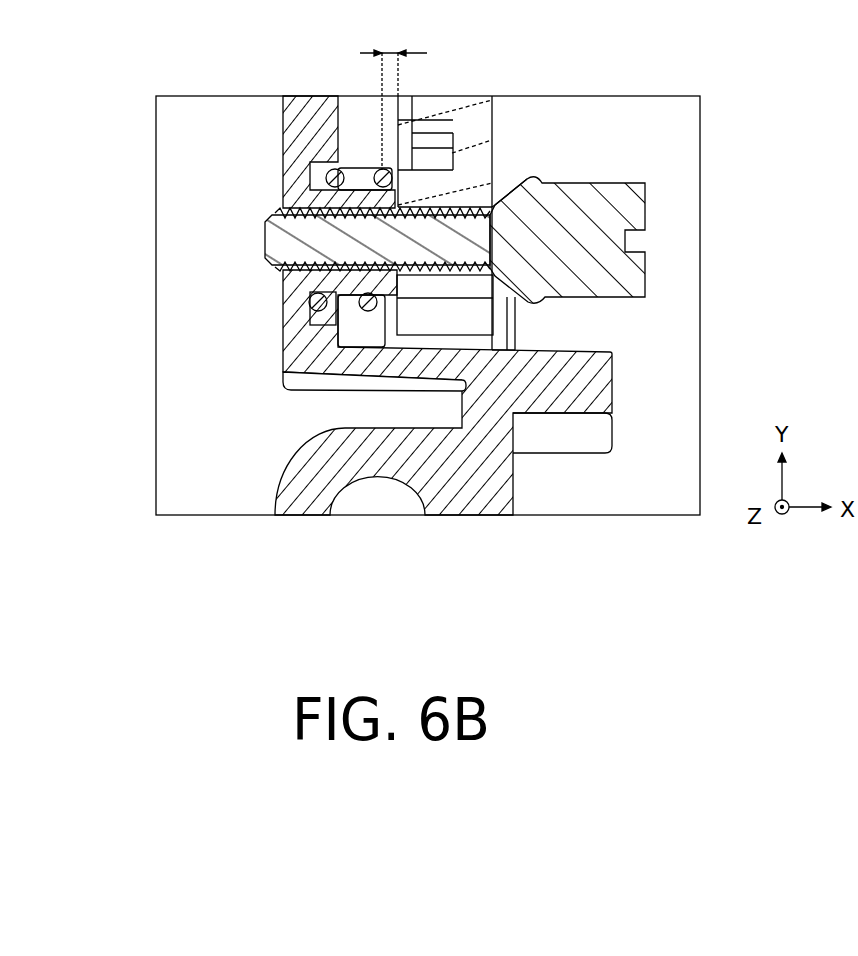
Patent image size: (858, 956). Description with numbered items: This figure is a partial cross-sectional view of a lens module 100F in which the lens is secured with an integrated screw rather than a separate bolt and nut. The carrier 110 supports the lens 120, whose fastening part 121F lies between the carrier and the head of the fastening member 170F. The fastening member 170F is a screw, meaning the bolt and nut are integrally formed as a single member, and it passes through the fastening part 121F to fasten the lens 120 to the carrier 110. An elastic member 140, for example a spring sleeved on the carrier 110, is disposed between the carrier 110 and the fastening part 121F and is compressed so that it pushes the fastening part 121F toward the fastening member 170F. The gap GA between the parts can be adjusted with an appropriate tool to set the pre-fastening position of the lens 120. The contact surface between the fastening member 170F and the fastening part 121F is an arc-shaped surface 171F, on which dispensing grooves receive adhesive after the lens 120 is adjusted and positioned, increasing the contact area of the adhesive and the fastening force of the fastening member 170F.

The lens module 100F is at (767, 608).
The carrier 110 is at (282, 128).
The elastic member 140 is at (308, 160).
The gap GA is at (392, 53).
The lens 120 is at (471, 200).
The fastening part 121F is at (490, 158).
The fastening member 170F is at (612, 187).
The arc-shaped surface 171F is at (518, 167).